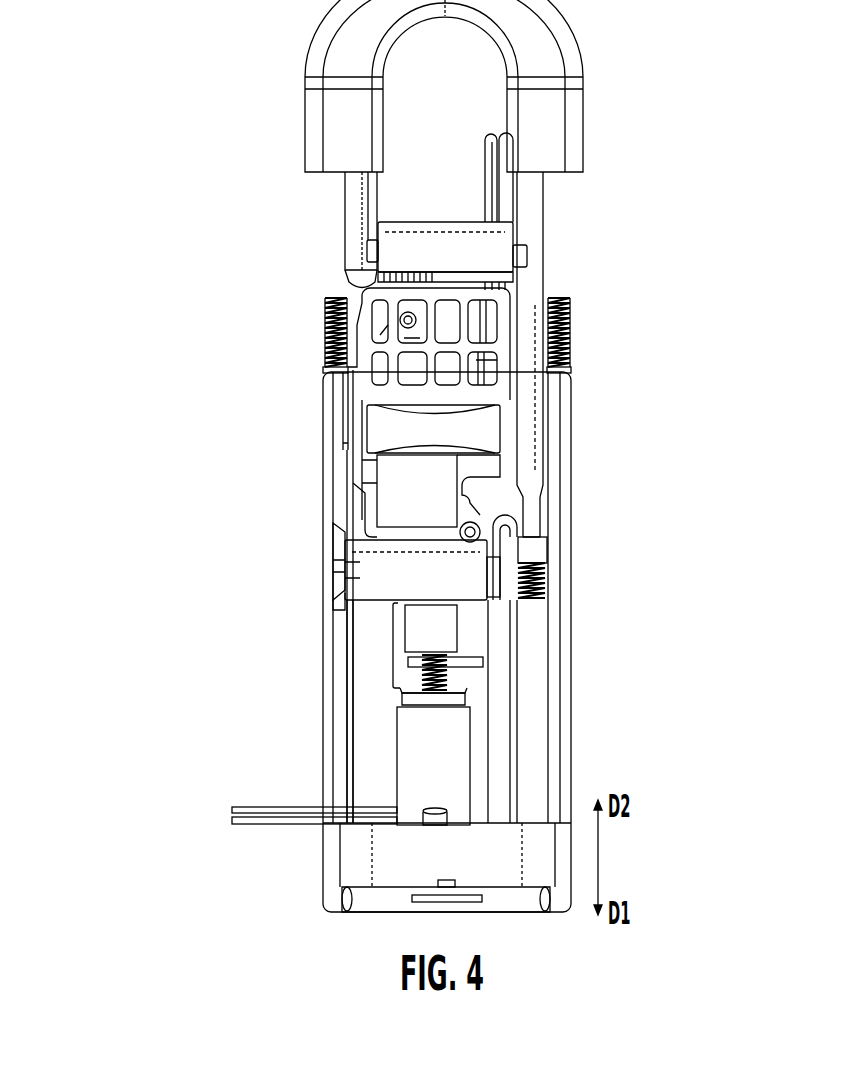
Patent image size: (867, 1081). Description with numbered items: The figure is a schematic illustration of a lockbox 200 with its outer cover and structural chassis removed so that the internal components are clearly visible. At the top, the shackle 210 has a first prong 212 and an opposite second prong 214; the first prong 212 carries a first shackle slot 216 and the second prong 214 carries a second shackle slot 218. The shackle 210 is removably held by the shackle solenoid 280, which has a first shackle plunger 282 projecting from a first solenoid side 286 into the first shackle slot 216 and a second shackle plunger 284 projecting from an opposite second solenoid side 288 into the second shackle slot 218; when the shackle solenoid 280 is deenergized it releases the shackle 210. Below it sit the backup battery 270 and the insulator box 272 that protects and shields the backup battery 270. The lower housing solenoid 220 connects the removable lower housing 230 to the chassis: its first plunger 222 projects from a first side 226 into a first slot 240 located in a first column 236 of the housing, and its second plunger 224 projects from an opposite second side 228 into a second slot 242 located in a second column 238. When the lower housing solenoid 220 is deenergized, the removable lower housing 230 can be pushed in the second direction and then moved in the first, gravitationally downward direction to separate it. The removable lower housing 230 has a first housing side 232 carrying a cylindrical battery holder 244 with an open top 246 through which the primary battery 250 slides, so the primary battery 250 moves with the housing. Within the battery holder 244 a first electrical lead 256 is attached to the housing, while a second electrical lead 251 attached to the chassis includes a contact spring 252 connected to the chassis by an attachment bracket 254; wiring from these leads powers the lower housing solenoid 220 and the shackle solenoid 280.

The lockbox 200 is at (74, 68).
The shackle 210 is at (560, 125).
The first prong 212 is at (350, 187).
The second prong 214 is at (535, 212).
The first shackle slot 216 is at (360, 270).
The second shackle slot 218 is at (525, 268).
The lower housing solenoid 220 is at (347, 550).
The first plunger 222 is at (350, 572).
The second plunger 224 is at (500, 565).
The first side 226 is at (350, 585).
The second side 228 is at (487, 545).
The removable lower housing 230 is at (333, 678).
The first housing side 232 is at (360, 740).
The first column 236 is at (340, 775).
The second column 238 is at (500, 752).
The first slot 240 is at (333, 593).
The second slot 242 is at (528, 585).
The battery holder 244 is at (347, 793).
The open top 246 is at (427, 710).
The primary battery 250 is at (455, 700).
The second electrical lead 251 is at (393, 648).
The contact spring 252 is at (440, 675).
The attachment bracket 254 is at (447, 635).
The first electrical lead 256 is at (430, 820).
The backup battery 270 is at (390, 432).
The insulator box 272 is at (375, 497).
The shackle solenoid 280 is at (360, 230).
The first shackle plunger 282 is at (360, 260).
The second shackle plunger 284 is at (525, 258).
The first solenoid side 286 is at (360, 227).
The second solenoid side 288 is at (515, 240).